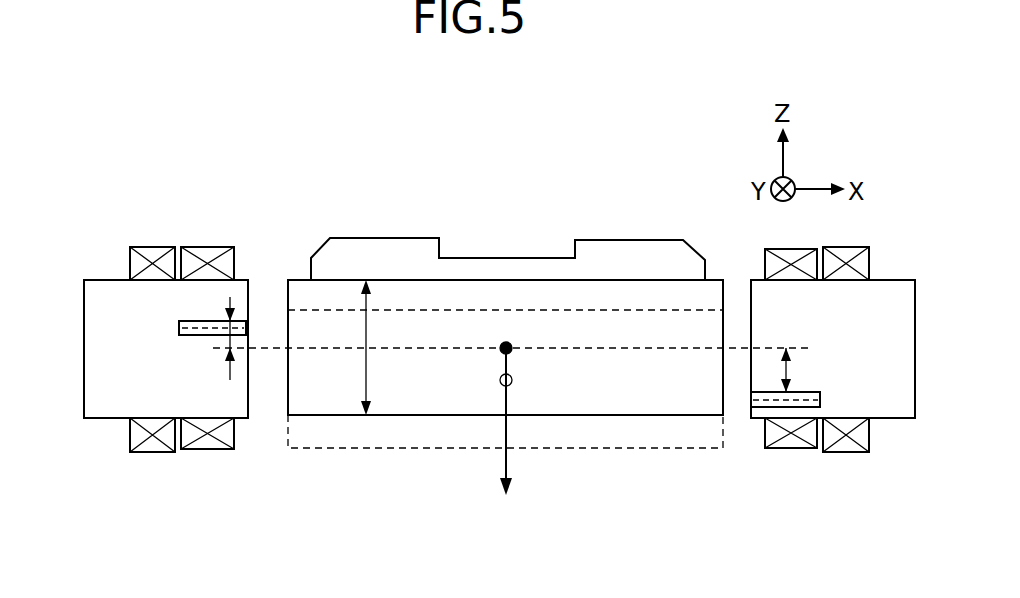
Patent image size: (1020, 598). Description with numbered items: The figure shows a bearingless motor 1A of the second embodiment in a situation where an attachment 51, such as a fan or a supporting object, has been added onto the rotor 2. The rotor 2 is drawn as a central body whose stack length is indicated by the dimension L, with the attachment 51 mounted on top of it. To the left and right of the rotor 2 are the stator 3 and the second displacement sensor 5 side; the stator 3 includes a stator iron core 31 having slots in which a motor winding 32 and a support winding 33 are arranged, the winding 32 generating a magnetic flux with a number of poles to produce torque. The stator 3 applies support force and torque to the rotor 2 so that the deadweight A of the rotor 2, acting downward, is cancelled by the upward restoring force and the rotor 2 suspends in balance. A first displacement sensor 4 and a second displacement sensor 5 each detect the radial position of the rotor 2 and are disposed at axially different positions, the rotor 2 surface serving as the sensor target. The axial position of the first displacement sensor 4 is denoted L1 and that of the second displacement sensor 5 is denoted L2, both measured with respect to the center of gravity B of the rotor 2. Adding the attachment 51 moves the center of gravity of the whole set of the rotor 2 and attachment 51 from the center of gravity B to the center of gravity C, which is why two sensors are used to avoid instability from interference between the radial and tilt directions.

The bearingless motor 1A is at (550, 150).
The rotor 2 is at (337, 417).
The stator 3 is at (148, 356).
The stator iron core 31 is at (127, 308).
The motor winding 32 is at (208, 247).
The support winding 33 is at (155, 452).
The first displacement sensor 4 is at (240, 321).
The second displacement sensor 5 is at (823, 382).
The attachment 51 is at (635, 238).
The stack length L is at (373, 347).
The axial position of the first displacement sensor L1 is at (228, 345).
The axial position of the second displacement sensor L2 is at (801, 370).
The deadweight A is at (505, 427).
The center of gravity B is at (511, 382).
The center of gravity C is at (510, 348).